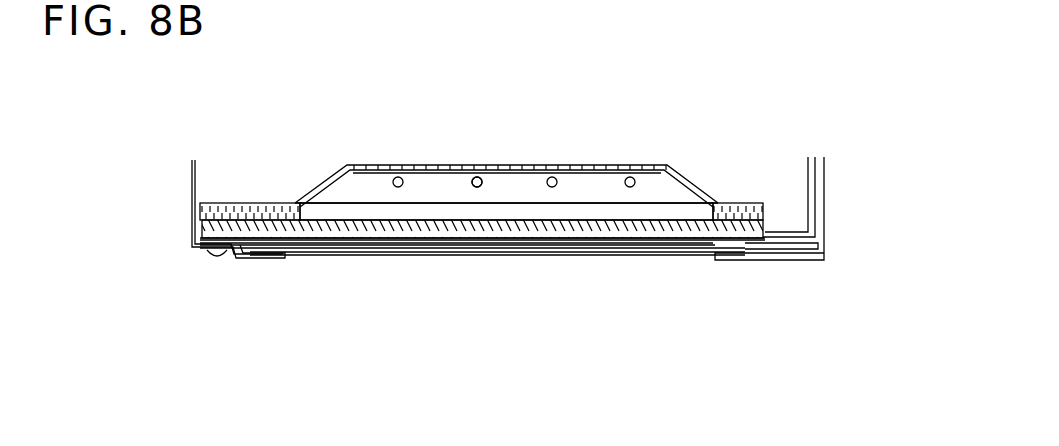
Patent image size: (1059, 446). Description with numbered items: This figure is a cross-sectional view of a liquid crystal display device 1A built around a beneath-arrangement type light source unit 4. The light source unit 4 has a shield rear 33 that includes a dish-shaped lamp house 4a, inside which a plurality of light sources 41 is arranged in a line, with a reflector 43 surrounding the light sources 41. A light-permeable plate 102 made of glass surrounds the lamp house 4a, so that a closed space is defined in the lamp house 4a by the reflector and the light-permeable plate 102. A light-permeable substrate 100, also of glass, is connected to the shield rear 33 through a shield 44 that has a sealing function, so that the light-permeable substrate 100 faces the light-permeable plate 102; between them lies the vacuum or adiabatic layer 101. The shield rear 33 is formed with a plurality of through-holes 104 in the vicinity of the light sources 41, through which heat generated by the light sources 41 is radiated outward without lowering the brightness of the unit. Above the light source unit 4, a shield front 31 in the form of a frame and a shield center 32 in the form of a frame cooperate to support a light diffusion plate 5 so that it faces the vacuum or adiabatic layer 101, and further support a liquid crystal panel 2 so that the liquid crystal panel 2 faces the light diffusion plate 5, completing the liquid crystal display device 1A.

The liquid crystal display device 1A is at (372, 318).
The liquid crystal panel 2 is at (385, 255).
The light source unit 4 is at (668, 187).
The lamp house 4a is at (365, 185).
The light diffusion plate 5 is at (633, 230).
The shield front 31 is at (796, 258).
The shield center 32 is at (818, 245).
The shield rear 33 is at (746, 201).
The light sources 41 is at (477, 177).
The top plate 43 is at (538, 165).
The shield 44 is at (233, 216).
The light-permeable substrate 100 is at (670, 222).
The vacuum or adiabatic layer 101 is at (355, 215).
The light-permeable plate 102 is at (580, 203).
The through-holes 104 is at (402, 165).